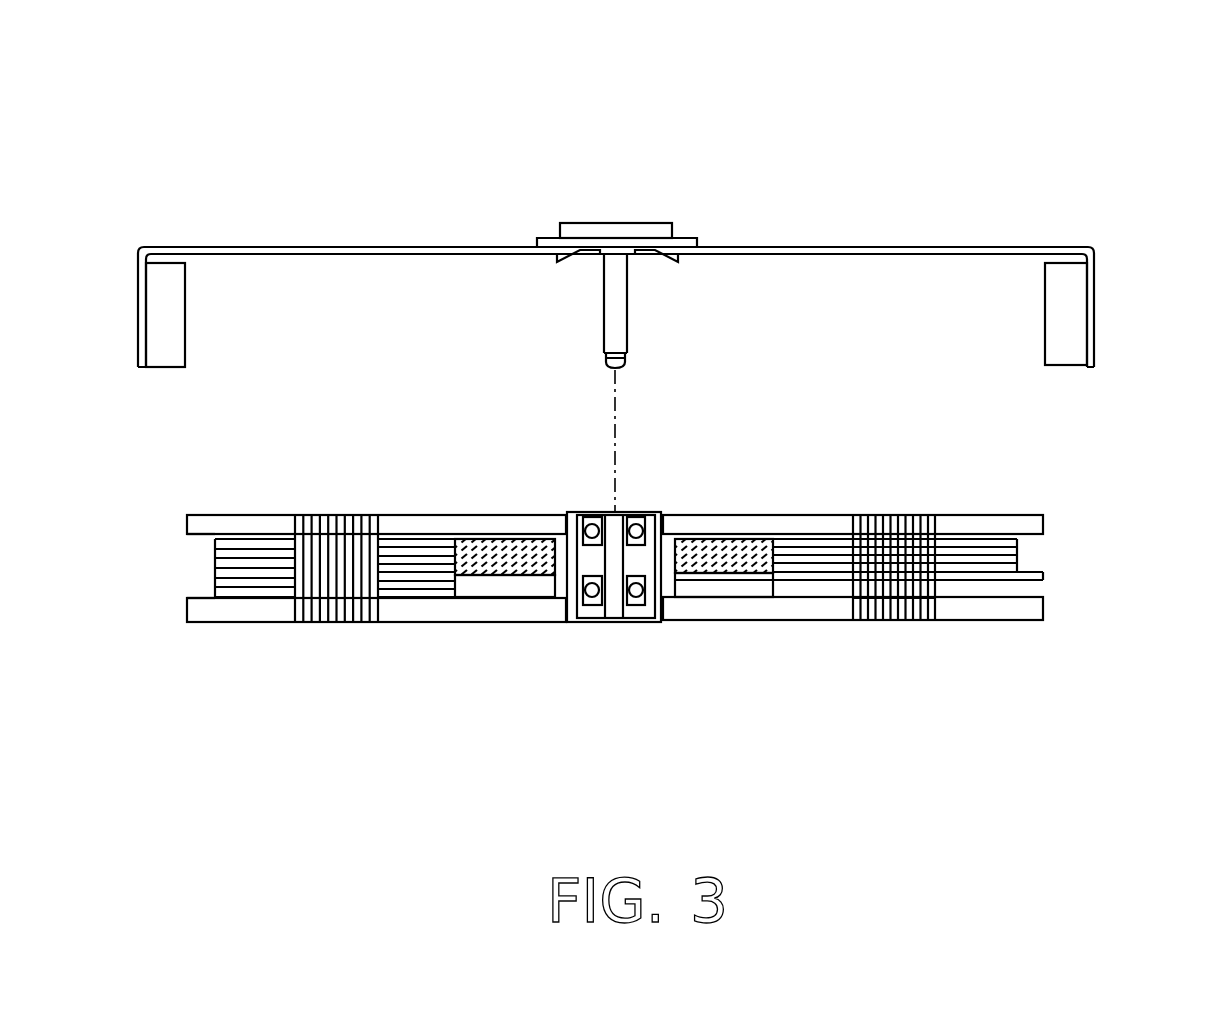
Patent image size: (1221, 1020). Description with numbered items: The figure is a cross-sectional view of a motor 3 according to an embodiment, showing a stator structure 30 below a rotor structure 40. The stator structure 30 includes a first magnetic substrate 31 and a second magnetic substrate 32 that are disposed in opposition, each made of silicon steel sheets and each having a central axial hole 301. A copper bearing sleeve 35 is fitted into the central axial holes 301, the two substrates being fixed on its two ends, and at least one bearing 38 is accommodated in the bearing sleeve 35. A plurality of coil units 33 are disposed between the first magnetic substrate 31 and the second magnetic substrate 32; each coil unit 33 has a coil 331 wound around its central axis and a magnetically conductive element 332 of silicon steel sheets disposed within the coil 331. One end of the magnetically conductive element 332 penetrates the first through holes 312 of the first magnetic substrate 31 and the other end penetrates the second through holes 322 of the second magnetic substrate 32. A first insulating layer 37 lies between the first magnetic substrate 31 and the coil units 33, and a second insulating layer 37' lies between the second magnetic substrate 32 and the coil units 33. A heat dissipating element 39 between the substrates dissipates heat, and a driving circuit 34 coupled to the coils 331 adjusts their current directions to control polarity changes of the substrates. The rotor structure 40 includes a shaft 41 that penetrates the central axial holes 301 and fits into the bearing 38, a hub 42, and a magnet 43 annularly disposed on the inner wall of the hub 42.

The motor 3 is at (160, 68).
The stator structure 30 is at (220, 683).
The first magnetic substrate 31 is at (422, 535).
The first through holes 312 is at (890, 533).
The second magnetic substrate 32 is at (436, 607).
The second through holes 322 is at (893, 607).
The coil units 33 is at (265, 580).
The coil 331 is at (266, 545).
The magnetically conductive element 332 is at (338, 578).
The driving circuit 34 is at (505, 578).
The bearing sleeve 35 is at (668, 567).
The first insulating layer 37 is at (152, 533).
The second insulating layer 37' is at (151, 598).
The bearing 38 is at (595, 607).
The heat dissipating element 39 is at (476, 578).
The central axial hole 301 is at (618, 515).
The rotor structure 40 is at (330, 218).
The shaft 41 is at (622, 298).
The hub 42 is at (868, 245).
The magnet 43 is at (1070, 312).